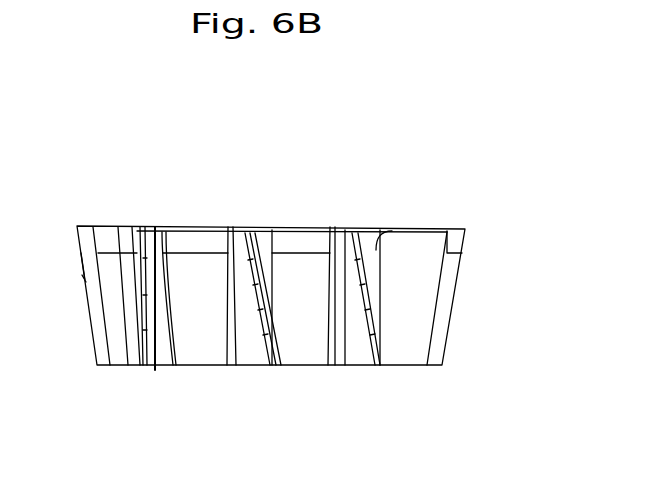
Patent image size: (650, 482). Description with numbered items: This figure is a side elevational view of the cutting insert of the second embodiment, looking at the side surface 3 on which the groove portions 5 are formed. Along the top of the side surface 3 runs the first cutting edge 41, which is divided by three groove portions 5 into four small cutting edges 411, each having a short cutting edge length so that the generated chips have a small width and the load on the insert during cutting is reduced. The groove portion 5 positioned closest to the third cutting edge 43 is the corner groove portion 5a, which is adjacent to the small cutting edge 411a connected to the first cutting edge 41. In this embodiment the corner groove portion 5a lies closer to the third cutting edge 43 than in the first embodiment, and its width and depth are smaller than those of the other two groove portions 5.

The side surface 3 is at (412, 300).
The first cutting edge 41 is at (393, 140).
The small cutting edge 411 is at (198, 226).
The small cutting edge 411a is at (131, 226).
The third cutting edge 43 is at (105, 226).
The groove portion 5 is at (253, 366).
The corner groove portion 5a is at (155, 366).